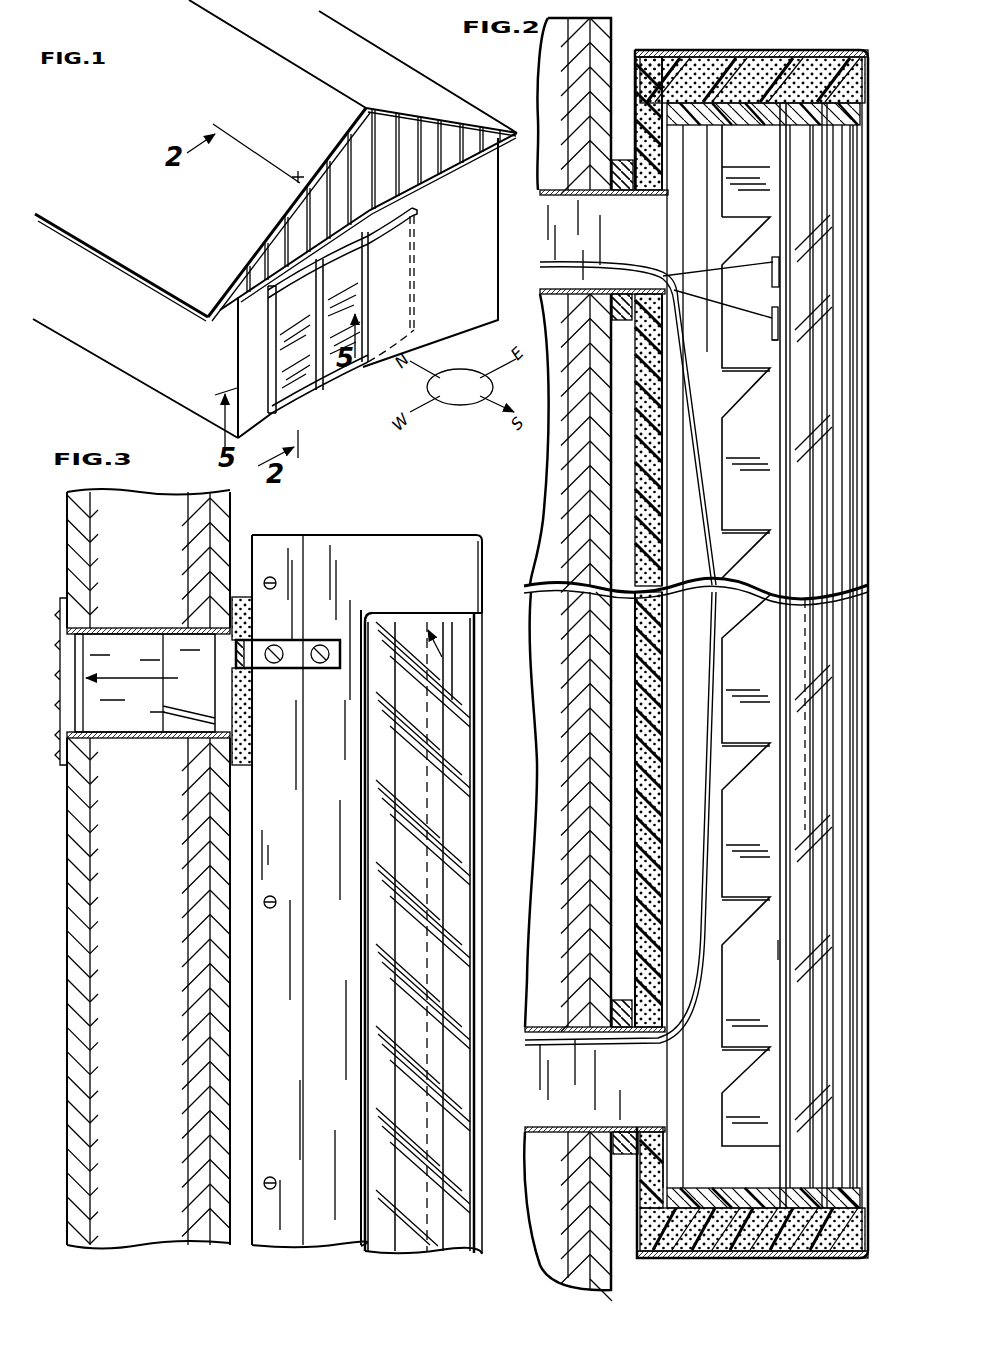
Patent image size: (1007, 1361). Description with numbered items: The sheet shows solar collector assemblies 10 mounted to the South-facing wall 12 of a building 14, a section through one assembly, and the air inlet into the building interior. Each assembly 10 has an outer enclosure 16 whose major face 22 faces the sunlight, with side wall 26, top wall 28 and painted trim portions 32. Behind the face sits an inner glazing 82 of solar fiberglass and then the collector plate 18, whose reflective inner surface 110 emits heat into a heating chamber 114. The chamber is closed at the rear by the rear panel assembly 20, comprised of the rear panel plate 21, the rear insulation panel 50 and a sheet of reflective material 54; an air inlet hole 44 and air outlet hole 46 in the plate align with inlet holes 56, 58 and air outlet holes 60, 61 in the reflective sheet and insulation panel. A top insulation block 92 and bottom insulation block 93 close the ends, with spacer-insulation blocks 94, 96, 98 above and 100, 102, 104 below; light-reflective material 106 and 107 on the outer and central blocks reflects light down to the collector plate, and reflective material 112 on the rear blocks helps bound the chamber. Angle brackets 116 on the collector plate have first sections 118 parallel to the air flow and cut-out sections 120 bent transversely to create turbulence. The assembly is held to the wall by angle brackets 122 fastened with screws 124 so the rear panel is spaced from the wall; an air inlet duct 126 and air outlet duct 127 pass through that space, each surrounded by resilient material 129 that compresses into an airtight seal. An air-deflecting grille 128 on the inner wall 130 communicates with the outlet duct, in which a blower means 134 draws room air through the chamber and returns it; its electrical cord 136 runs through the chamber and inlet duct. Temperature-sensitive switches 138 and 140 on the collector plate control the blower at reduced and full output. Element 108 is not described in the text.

In FIG. 1, the solar collector assembly 10 is at (330, 322).
In FIG. 3, the solar collector assembly 10 is at (488, 525).
In FIG. 2, the solar collector assembly 10 is at (800, 10).
In FIG. 1, the wall 12 is at (470, 247).
In FIG. 3, the wall 12 is at (234, 516).
In FIG. 2, the wall 12 is at (615, 32).
In FIG. 1, the building 14 is at (434, 71).
In FIG. 3, the outer enclosure 16 is at (408, 543).
In FIG. 2, the outer enclosure 16 is at (868, 374).
In FIG. 2, the collector plate 18 is at (785, 990).
In FIG. 2, the rear panel assembly 20 is at (634, 1176).
In FIG. 2, the rear panel plate 21 is at (640, 866).
In FIG. 2, the major face 22 is at (867, 731).
In FIG. 3, the side wall 26 is at (446, 848).
In FIG. 3, the top wall 28 is at (350, 538).
In FIG. 3, the trim portions 32 is at (267, 848).
In FIG. 2, the air inlet hole 44 is at (641, 1130).
In FIG. 2, the air outlet hole 46 is at (637, 193).
In FIG. 2, the rear insulation panel 50 is at (664, 745).
In FIG. 2, the sheet of reflective material 54 is at (664, 793).
In FIG. 2, the inlet hole 56 is at (665, 1128).
In FIG. 2, the inlet hole 58 is at (655, 1126).
In FIG. 2, the air outlet hole 60 is at (668, 200).
In FIG. 2, the air outlet hole 61 is at (604, 221).
In FIG. 2, the inner glazing 82 is at (820, 692).
In FIG. 2, the top insulation block 92 is at (688, 58).
In FIG. 2, the bottom insulation block 93 is at (733, 1236).
In FIG. 2, the spacer-insulation block 94 is at (696, 126).
In FIG. 2, the spacer-insulation block 96 is at (795, 655).
In FIG. 2, the spacer-insulation block 98 is at (836, 655).
In FIG. 2, the spacer-insulation block 100 is at (688, 1195).
In FIG. 2, the spacer-insulation block 102 is at (793, 1192).
In FIG. 2, the spacer-insulation block 104 is at (843, 1195).
In FIG. 2, the light-reflective material 106 is at (872, 148).
In FIG. 2, the light-reflective material 107 is at (786, 128).
In FIG. 2, the glazing seal 108 is at (796, 952).
In FIG. 2, the inner surface 110 is at (780, 949).
In FIG. 2, the reflective material 112 is at (732, 126).
In FIG. 2, the heating chamber 114 is at (706, 672).
In FIG. 2, the angle brackets 116 is at (762, 682).
In FIG. 2, the first sections 118 is at (754, 340).
In FIG. 2, the cut-out sections 120 is at (741, 371).
In FIG. 1, the angle brackets 122 is at (271, 298).
In FIG. 3, the angle brackets 122 is at (338, 669).
In FIG. 3, the screws 124 is at (322, 646).
In FIG. 3, the air inlet duct 126 is at (152, 741).
In FIG. 2, the air inlet duct 126 is at (583, 232).
In FIG. 2, the air outlet duct 127 is at (601, 1107).
In FIG. 3, the air-deflecting grille 128 is at (58, 714).
In FIG. 3, the resilient material 129 is at (251, 748).
In FIG. 2, the resilient material 129 is at (612, 308).
In FIG. 3, the inner wall 130 is at (84, 954).
In FIG. 3, the blower means 134 is at (140, 665).
In FIG. 2, the electrical cord 136 is at (687, 349).
In FIG. 2, the first temperature-sensitive control switch 138 is at (771, 283).
In FIG. 2, the second temperature-sensitive control switch 140 is at (770, 334).